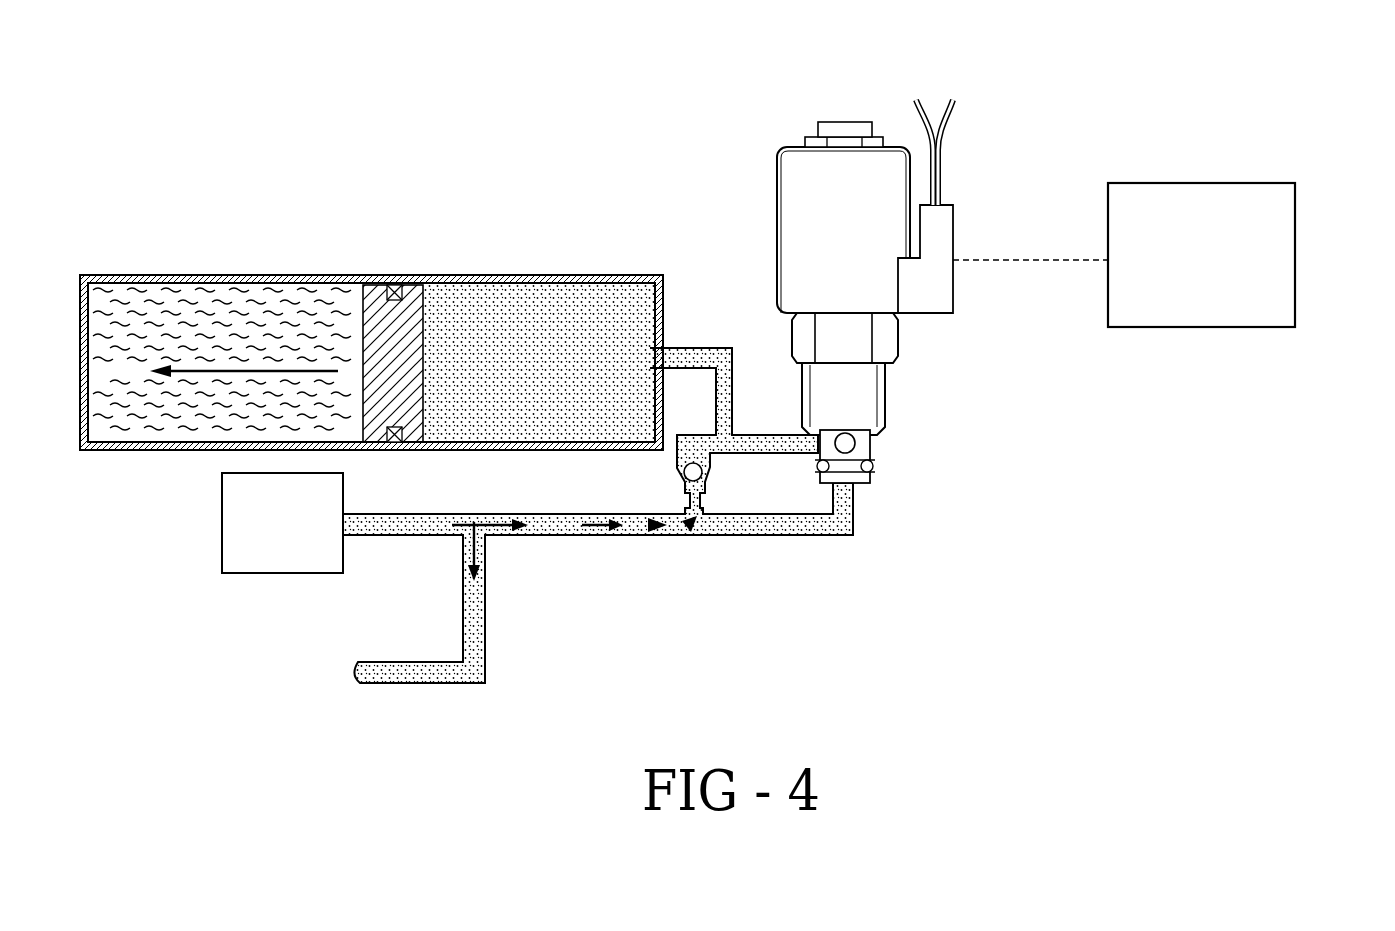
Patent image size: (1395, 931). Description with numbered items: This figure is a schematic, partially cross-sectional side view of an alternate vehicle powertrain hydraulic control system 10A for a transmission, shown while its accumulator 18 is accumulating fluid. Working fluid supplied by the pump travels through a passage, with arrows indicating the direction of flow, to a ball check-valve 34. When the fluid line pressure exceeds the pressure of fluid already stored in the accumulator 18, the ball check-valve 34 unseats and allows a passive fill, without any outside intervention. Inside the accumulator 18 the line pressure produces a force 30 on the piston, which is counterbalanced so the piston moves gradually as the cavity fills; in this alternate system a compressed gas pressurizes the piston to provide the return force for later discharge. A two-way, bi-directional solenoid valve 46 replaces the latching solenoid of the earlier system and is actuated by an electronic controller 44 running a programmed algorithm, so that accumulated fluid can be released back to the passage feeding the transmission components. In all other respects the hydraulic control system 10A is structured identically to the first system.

The accumulator 18 is at (212, 262).
The force 30 is at (228, 374).
The ball check-valve 34 is at (702, 477).
The electronic controller 44 is at (1295, 259).
The two-way solenoid valve 46 is at (950, 155).
The hydraulic control system 10A is at (678, 575).